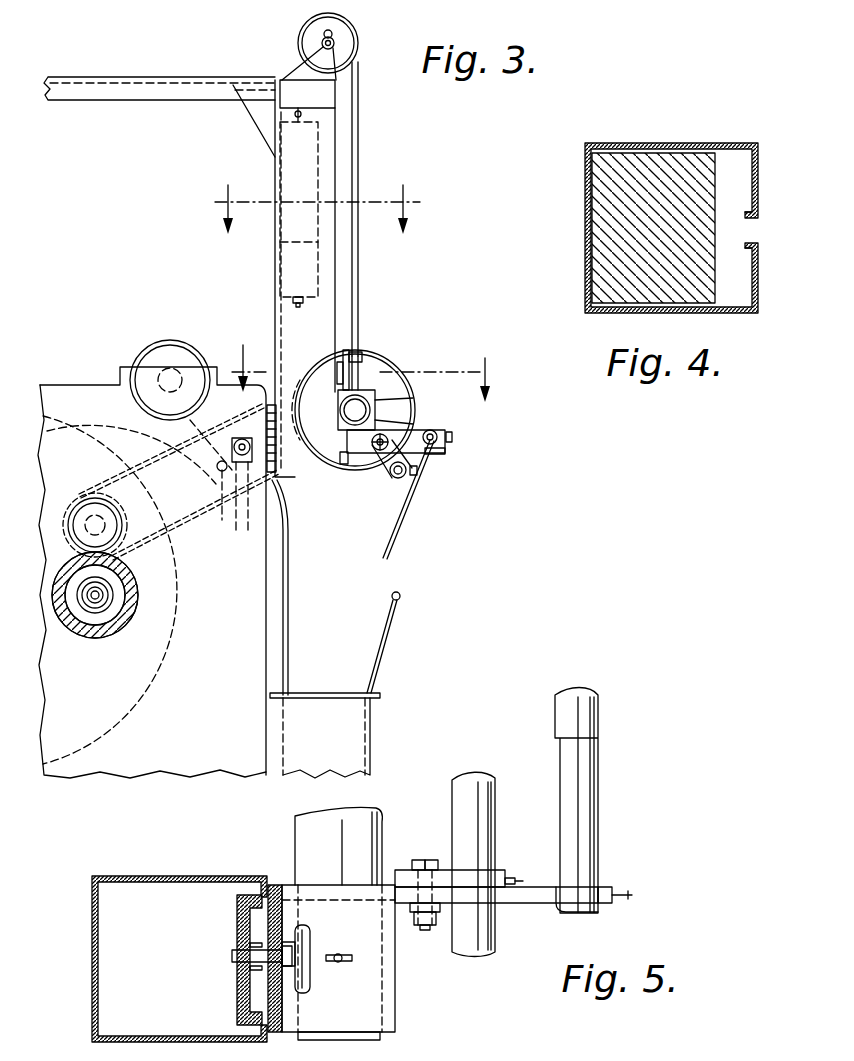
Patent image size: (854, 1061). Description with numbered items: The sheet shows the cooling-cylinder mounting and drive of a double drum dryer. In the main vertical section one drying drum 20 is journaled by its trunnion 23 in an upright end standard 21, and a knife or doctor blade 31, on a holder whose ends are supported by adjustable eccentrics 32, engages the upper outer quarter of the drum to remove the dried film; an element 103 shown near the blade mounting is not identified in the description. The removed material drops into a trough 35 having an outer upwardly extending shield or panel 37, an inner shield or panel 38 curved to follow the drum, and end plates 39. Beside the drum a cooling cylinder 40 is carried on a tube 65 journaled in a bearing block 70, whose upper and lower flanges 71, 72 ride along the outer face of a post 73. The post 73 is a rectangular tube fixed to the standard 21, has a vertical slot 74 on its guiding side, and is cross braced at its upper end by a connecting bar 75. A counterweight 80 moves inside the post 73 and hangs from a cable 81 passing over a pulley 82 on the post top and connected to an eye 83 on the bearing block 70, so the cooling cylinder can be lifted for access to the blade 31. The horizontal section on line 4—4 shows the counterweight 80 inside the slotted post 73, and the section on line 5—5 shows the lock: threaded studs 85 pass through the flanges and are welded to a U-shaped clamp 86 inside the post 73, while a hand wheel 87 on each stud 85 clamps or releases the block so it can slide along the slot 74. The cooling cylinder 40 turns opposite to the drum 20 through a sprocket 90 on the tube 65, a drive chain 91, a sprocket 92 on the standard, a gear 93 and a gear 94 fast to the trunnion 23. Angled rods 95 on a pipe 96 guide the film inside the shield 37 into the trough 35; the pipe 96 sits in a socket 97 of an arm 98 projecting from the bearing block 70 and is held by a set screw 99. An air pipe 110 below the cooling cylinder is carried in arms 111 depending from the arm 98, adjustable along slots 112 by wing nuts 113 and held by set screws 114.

In FIG. 3, the drying drum 20 is at (214, 728).
In FIG. 3, the upright end standard 21 is at (87, 385).
In FIG. 3, the trunnion 23 is at (102, 640).
In FIG. 3, the knife or doctor blade 31 is at (180, 452).
In FIG. 3, the eccentric 32 is at (155, 347).
In FIG. 3, the trough 35 is at (372, 724).
In FIG. 3, the outer shield or panel 37 is at (384, 660).
In FIG. 3, the inner shield or panel 38 is at (289, 627).
In FIG. 3, the end plate 39 is at (331, 692).
In FIG. 3, the cooling cylinder 40 is at (404, 368).
In FIG. 3, the tube 65 is at (355, 410).
In FIG. 5, the tube 65 is at (383, 829).
In FIG. 3, the bearing block 70 is at (377, 391).
In FIG. 5, the bearing block 70 is at (396, 992).
In FIG. 3, the upper flange 71 is at (340, 374).
In FIG. 5, the upper flange 71 is at (283, 1014).
In FIG. 3, the lower flange 72 is at (278, 440).
In FIG. 3, the post 73 is at (328, 306).
In FIG. 4, the post 73 is at (727, 143).
In FIG. 5, the post 73 is at (172, 877).
In FIG. 4, the vertical slot 74 is at (754, 244).
In FIG. 5, the vertical slot 74 is at (245, 950).
In FIG. 3, the connecting bar 75 is at (110, 82).
In FIG. 3, the counterweight 80 is at (320, 170).
In FIG. 4, the counterweight 80 is at (598, 226).
In FIG. 3, the cable 81 is at (359, 120).
In FIG. 5, the cable 81 is at (340, 953).
In FIG. 3, the pulley 82 is at (356, 33).
In FIG. 3, the eye 83 is at (362, 386).
In FIG. 5, the eye 83 is at (312, 984).
In FIG. 5, the threaded stud 85 is at (232, 960).
In FIG. 5, the U-shaped clamp 86 is at (242, 912).
In FIG. 3, the hand wheel 87 is at (337, 362).
In FIG. 5, the hand wheel 87 is at (308, 992).
In FIG. 3, the sprocket 90 is at (307, 410).
In FIG. 3, the drive chain 91 is at (168, 478).
In FIG. 3, the sprocket 92 is at (124, 519).
In FIG. 3, the gear 93 is at (94, 516).
In FIG. 3, the gear 94 is at (122, 638).
In FIG. 3, the rod 95 is at (408, 523).
In FIG. 3, the tube or pipe 96 is at (437, 436).
In FIG. 5, the tube or pipe 96 is at (599, 725).
In FIG. 3, the socket 97 is at (442, 446).
In FIG. 5, the socket 97 is at (566, 906).
In FIG. 3, the arm 98 is at (437, 455).
In FIG. 5, the arm 98 is at (548, 889).
In FIG. 3, the set screw 99 is at (453, 438).
In FIG. 5, the set screw 99 is at (630, 898).
In FIG. 3, the pin 103 is at (236, 545).
In FIG. 3, the pipe 110 is at (406, 482).
In FIG. 5, the pipe 110 is at (491, 797).
In FIG. 3, the arm 111 is at (392, 480).
In FIG. 5, the arm 111 is at (463, 870).
In FIG. 3, the slot 112 is at (417, 440).
In FIG. 3, the wing nut 113 is at (377, 452).
In FIG. 5, the wing nut 113 is at (426, 932).
In FIG. 3, the set screw 114 is at (418, 471).
In FIG. 5, the set screw 114 is at (516, 877).
In FIG. 3, the section line 4— 4 is at (310, 209).
In FIG. 3, the section line 5— 5 is at (368, 373).